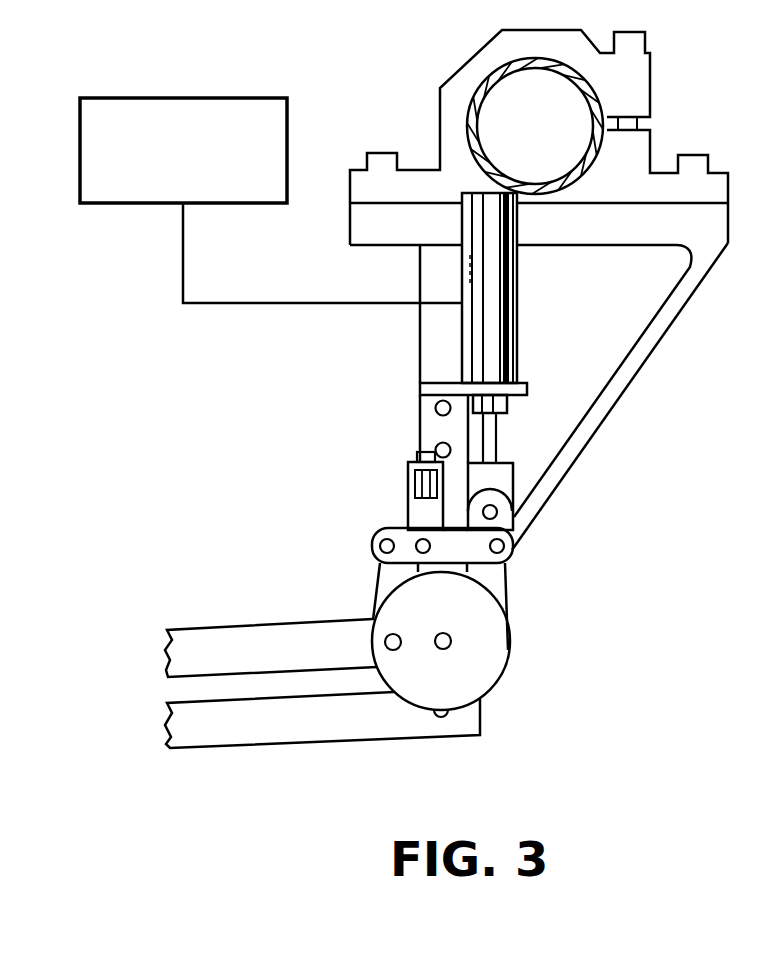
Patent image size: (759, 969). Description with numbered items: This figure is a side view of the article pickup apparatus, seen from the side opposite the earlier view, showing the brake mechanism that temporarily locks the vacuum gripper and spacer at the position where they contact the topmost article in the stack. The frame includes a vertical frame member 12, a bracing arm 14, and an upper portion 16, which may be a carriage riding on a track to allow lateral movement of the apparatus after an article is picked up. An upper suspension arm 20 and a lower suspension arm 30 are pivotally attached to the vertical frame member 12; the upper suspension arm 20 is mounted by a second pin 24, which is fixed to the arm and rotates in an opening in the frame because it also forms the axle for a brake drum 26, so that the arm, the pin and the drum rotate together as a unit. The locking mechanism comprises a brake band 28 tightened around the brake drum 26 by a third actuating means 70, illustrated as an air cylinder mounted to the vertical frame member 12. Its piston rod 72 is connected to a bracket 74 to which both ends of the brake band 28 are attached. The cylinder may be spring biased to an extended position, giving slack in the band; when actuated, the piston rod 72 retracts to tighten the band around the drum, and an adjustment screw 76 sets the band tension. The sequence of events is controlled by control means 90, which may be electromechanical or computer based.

The control means 90 is at (253, 98).
The upper portion 16 is at (653, 100).
The bracing arm 14 is at (607, 418).
The vertical frame member 12 is at (420, 343).
The third actuating means 70 is at (517, 325).
The piston rod 72 is at (500, 437).
The adjustment screw 76 is at (410, 485).
The bracket 74 is at (380, 532).
The brake band 28 is at (508, 593).
The brake drum 26 is at (503, 677).
The second pin 24 is at (452, 640).
The upper suspension arm 20 is at (243, 625).
The lower suspension arm 30 is at (250, 747).